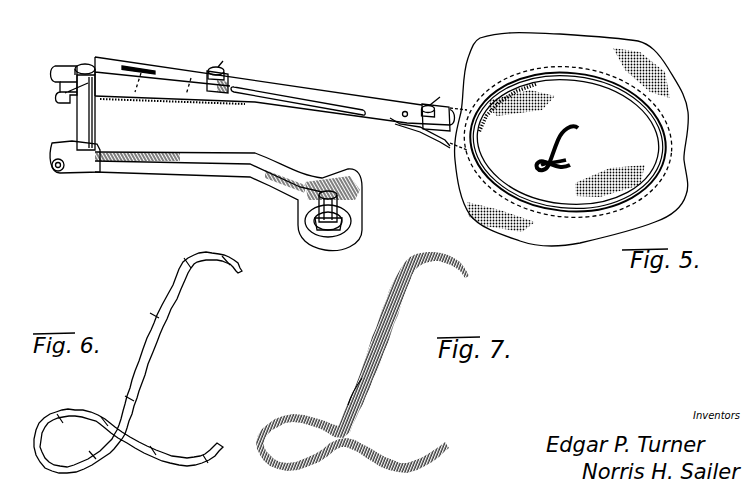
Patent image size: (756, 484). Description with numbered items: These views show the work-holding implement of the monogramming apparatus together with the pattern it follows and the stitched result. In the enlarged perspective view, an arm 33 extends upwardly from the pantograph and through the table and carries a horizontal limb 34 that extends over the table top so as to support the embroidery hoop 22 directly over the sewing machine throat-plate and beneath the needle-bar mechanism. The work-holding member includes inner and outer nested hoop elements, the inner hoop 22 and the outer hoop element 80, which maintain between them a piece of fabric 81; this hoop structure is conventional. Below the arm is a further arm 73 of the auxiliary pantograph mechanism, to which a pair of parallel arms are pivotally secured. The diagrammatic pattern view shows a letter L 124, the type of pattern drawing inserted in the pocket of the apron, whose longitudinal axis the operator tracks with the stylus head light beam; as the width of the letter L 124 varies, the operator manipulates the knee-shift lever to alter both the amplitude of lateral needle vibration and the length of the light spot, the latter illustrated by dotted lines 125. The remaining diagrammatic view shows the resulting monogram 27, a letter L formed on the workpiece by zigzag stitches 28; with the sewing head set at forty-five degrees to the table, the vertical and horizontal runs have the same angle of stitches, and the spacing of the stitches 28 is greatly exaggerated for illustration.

In FIG. 5, the embroidery hoop 22 is at (533, 72).
In FIG. 5, the monogram 27 is at (563, 147).
In FIG. 7, the monogram 27 is at (401, 341).
In FIG. 7, the zigzag stitches 28 is at (367, 347).
In FIG. 5, the arm 33 is at (92, 131).
In FIG. 5, the horizontal limb 34 is at (171, 79).
In FIG. 5, the arm 73 is at (360, 212).
In FIG. 5, the outer hoop element 80 is at (587, 77).
In FIG. 5, the piece of fabric 81 is at (606, 47).
In FIG. 6, the letter L 124 is at (134, 359).
In FIG. 6, the dotted lines 125 is at (225, 261).